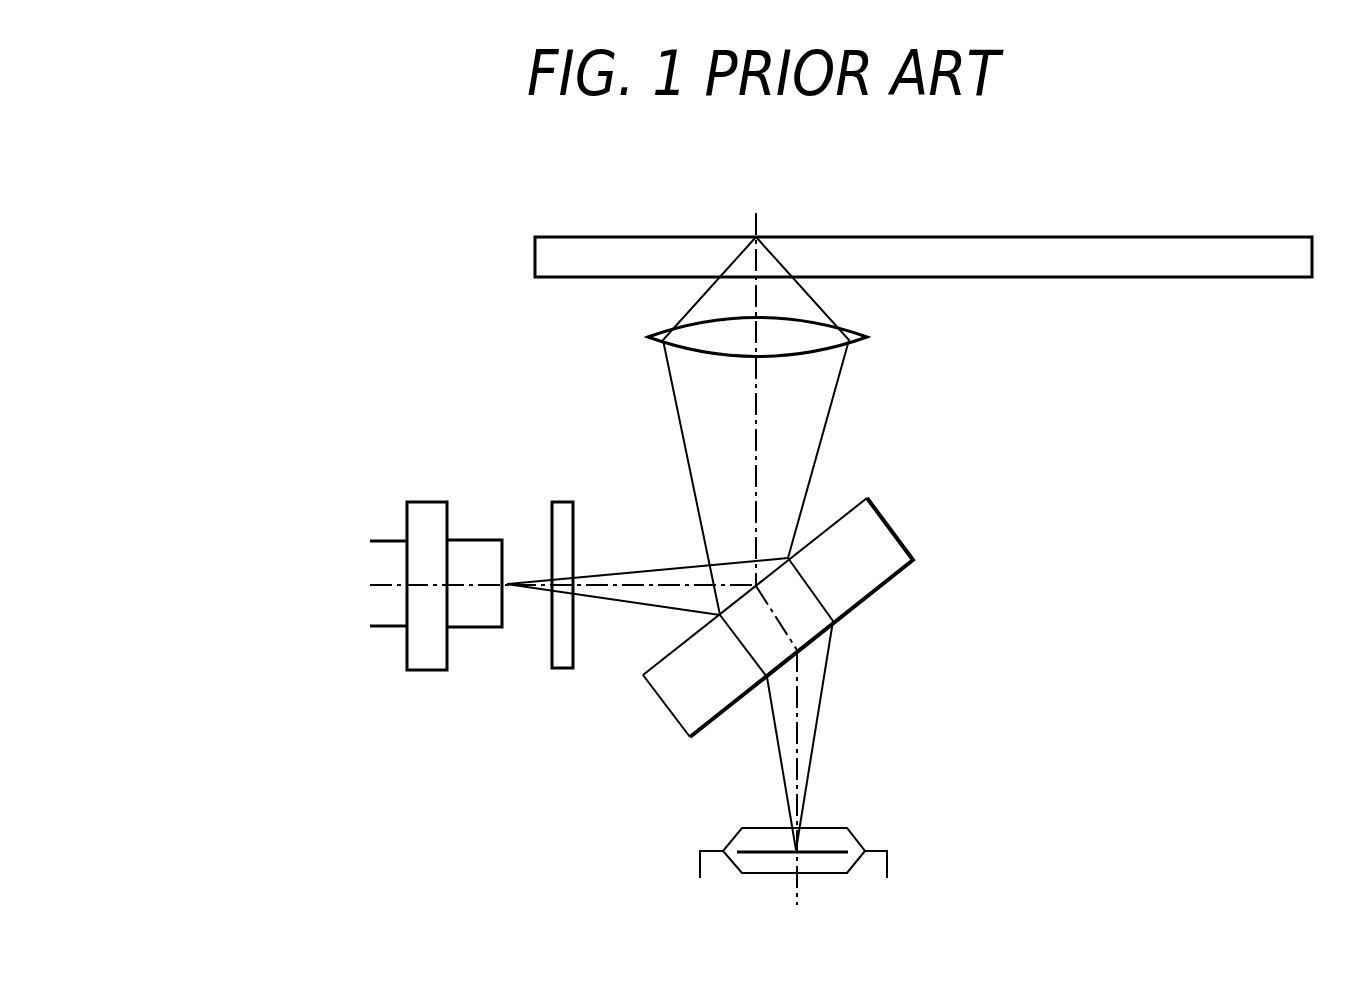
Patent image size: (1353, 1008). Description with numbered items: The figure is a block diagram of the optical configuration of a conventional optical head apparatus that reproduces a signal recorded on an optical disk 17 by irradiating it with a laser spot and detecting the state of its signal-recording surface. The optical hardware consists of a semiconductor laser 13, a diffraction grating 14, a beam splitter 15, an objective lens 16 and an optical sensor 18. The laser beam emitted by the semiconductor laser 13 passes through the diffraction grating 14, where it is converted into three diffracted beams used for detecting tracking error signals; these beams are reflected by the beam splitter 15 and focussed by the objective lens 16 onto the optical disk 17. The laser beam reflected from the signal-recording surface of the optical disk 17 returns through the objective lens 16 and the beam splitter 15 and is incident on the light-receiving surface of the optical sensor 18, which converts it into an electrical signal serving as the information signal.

The semiconductor laser 13 is at (408, 514).
The diffraction grating 14 is at (560, 513).
The beam splitter 15 is at (878, 542).
The objective lens 16 is at (866, 337).
The optical disk 17 is at (938, 243).
The optical sensor 18 is at (843, 838).